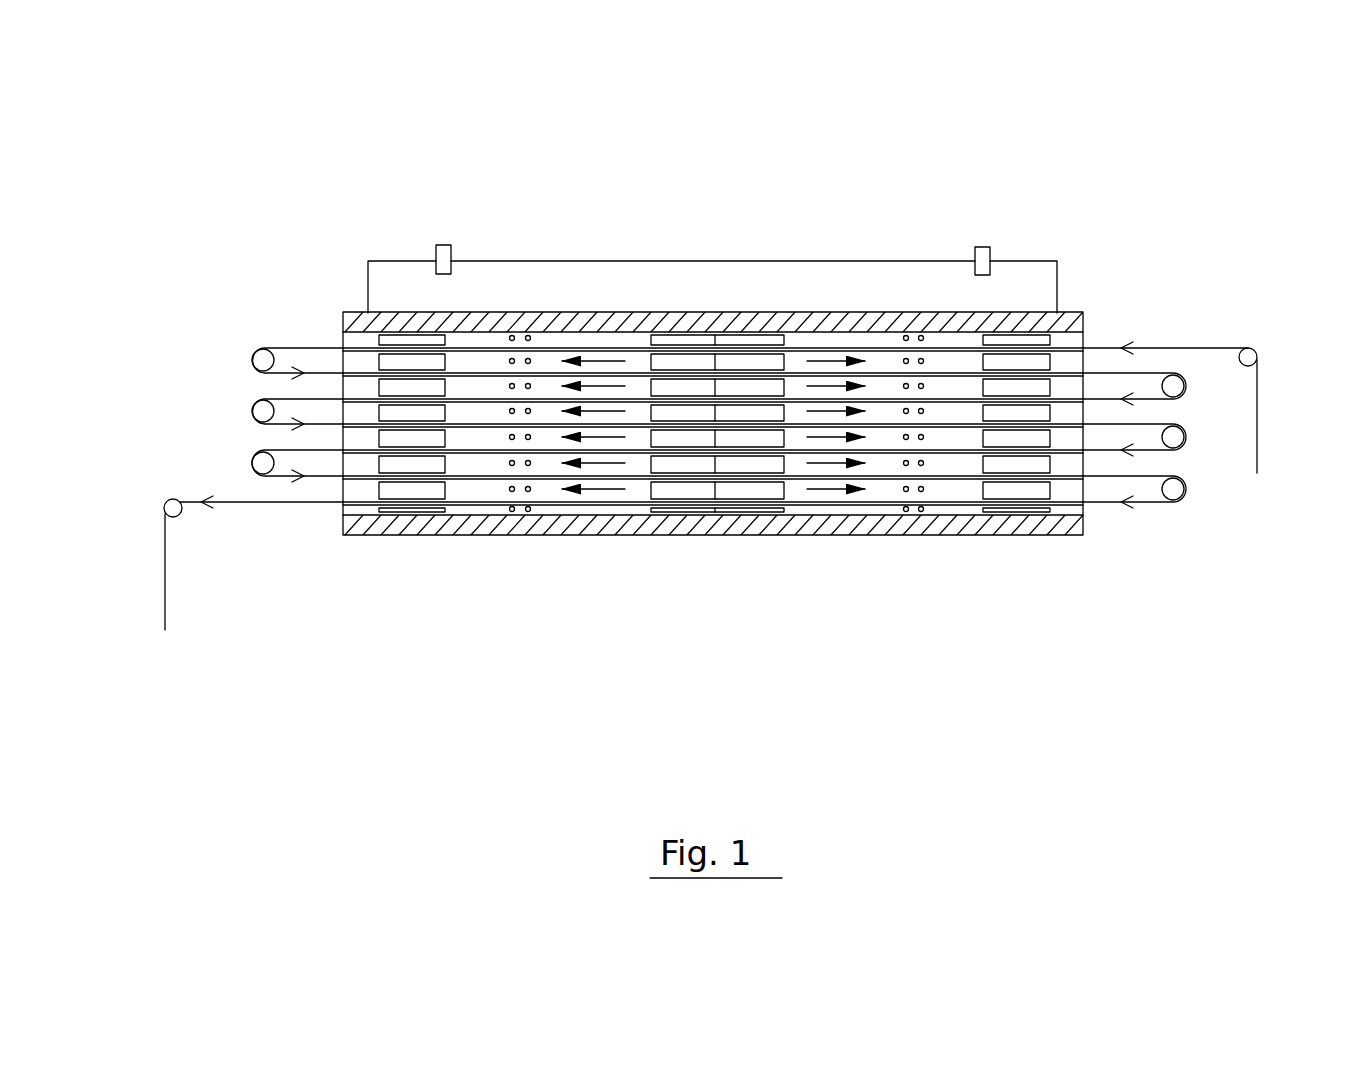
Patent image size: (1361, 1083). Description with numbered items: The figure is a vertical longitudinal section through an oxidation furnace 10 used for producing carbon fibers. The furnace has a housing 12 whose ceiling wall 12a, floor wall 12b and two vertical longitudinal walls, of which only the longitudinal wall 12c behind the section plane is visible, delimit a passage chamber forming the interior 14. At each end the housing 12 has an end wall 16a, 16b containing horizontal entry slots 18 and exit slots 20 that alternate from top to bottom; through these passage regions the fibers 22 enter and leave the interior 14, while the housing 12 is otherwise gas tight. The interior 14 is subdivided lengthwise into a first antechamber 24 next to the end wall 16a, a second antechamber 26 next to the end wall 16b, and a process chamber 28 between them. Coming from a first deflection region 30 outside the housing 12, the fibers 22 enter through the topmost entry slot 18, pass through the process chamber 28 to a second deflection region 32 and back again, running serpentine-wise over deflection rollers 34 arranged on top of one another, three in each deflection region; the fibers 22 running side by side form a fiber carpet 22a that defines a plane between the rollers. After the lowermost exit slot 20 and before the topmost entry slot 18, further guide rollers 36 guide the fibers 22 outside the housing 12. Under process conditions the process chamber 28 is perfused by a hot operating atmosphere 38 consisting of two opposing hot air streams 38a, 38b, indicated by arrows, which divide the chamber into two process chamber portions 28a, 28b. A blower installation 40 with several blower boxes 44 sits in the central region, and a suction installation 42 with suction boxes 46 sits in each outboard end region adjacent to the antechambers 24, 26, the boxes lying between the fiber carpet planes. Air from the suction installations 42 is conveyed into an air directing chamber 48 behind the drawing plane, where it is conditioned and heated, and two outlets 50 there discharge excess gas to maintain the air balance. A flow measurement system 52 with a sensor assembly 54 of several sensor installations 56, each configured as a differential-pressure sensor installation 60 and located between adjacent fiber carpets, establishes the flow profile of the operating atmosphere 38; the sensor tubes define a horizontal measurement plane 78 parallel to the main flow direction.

The oxidation furnace 10 is at (1092, 160).
The housing 12 is at (800, 290).
The ceiling wall 12a is at (855, 313).
The floor wall 12b is at (832, 505).
The longitudinal wall 12c is at (967, 517).
The interior 14 is at (645, 520).
The end wall 16a is at (1085, 330).
The end wall 16b is at (343, 330).
The entry slots 18 is at (342, 485).
The exit slots 20 is at (340, 397).
The fibers 22 is at (465, 315).
The fiber carpet 22a is at (521, 303).
The first antechamber 24 is at (1063, 517).
The second antechamber 26 is at (367, 517).
The process chamber 28 is at (637, 313).
The process chamber portion 28a is at (963, 358).
The process chamber portion 28b is at (552, 357).
The first deflection region 30 is at (1202, 225).
The second deflection region 32 is at (238, 280).
The deflection rollers 34 is at (262, 359).
The guide rollers 36 is at (170, 508).
The operating atmosphere 38 is at (790, 492).
The hot air stream 38a is at (822, 515).
The hot air stream 38b is at (598, 499).
The blower installation 40 is at (712, 518).
The suction installation 42 is at (415, 519).
The blower boxes 44 is at (680, 313).
The suction boxes 46 is at (410, 345).
The air directing chamber 48 is at (748, 285).
The outlets 50 is at (443, 245).
The flow measurement system 52 is at (923, 563).
The sensor assembly 54 is at (553, 313).
The sensor installations 56 is at (525, 472).
The differential-pressure sensor installation 60 is at (500, 420).
The measurement plane 78 is at (958, 388).